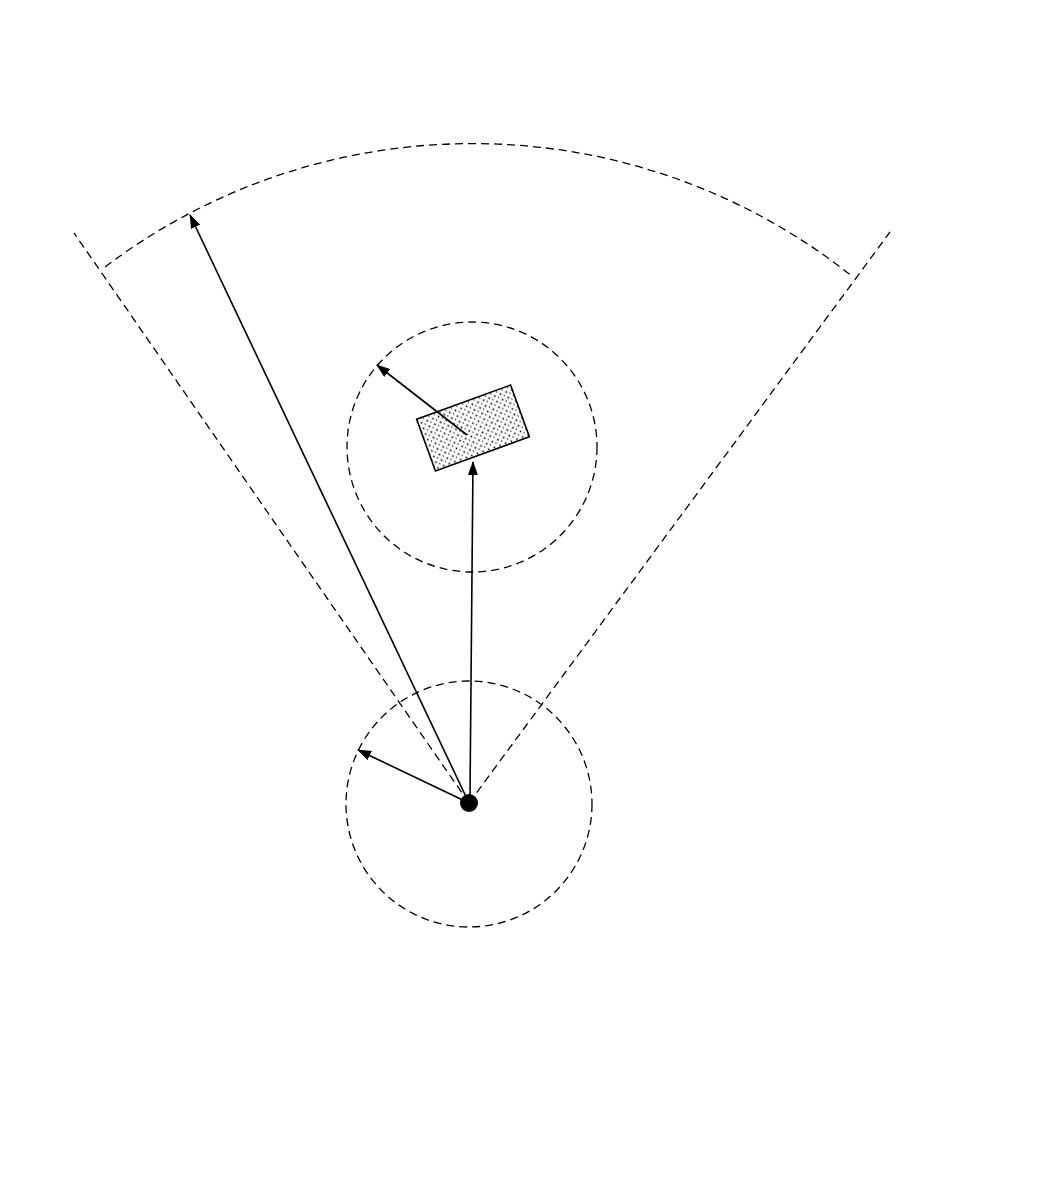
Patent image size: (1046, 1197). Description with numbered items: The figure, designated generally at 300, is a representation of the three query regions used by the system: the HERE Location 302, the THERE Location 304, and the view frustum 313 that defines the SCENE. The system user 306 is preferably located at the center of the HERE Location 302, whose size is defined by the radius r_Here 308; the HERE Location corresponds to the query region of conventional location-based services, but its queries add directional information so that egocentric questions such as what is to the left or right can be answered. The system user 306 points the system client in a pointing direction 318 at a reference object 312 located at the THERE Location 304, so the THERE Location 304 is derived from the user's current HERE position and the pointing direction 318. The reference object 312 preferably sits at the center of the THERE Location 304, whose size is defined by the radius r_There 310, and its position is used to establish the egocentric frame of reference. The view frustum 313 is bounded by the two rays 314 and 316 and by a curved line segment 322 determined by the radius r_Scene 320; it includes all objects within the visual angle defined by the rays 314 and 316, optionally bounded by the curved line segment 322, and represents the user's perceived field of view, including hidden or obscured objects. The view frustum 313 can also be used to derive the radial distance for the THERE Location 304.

The query regions representation 300 is at (586, 84).
The HERE Location 302 is at (350, 826).
The THERE Location 304 is at (597, 433).
The system user 306 is at (477, 807).
The radius r_Here 308 is at (398, 775).
The radius r_There 310 is at (405, 392).
The reference object 312 is at (487, 392).
The view frustum 313 is at (412, 147).
The ray 314 is at (638, 577).
The ray 316 is at (225, 457).
The pointing direction 318 is at (474, 624).
The radius r_Scene 320 is at (243, 330).
The curved line segment 322 is at (679, 178).